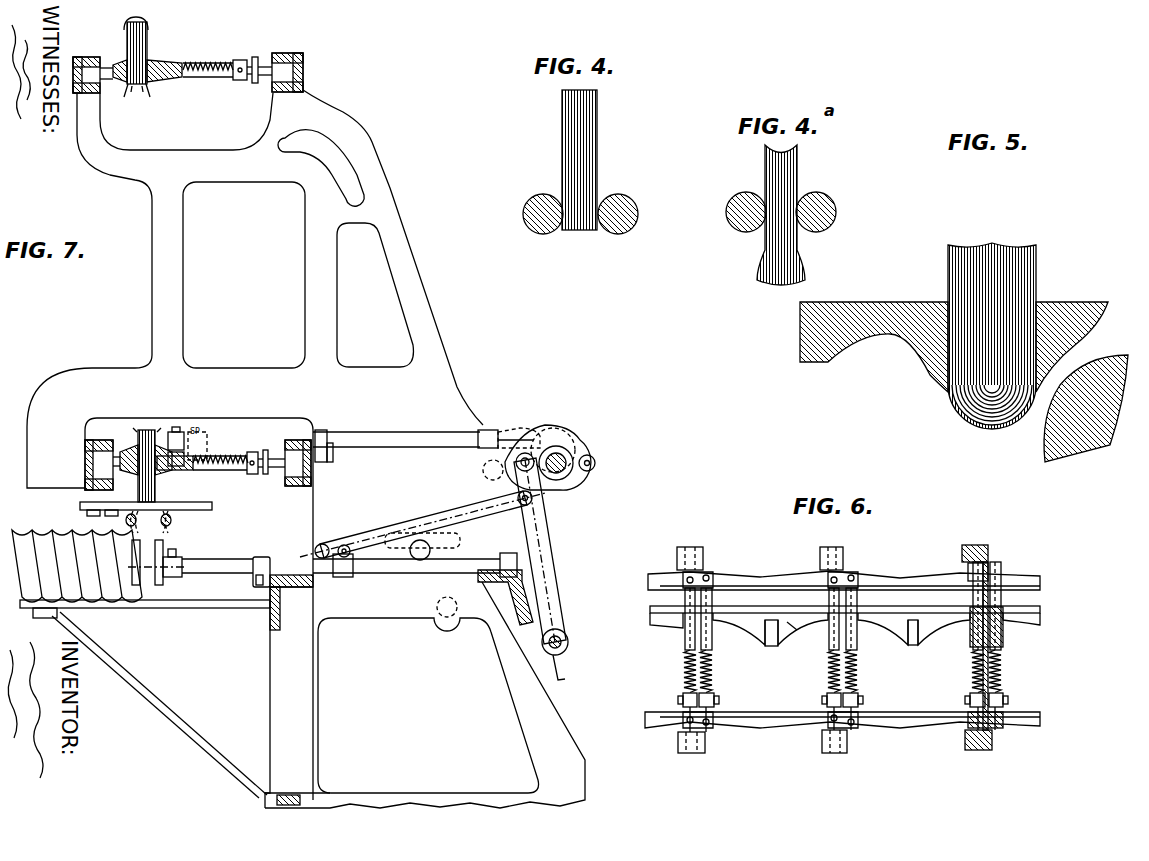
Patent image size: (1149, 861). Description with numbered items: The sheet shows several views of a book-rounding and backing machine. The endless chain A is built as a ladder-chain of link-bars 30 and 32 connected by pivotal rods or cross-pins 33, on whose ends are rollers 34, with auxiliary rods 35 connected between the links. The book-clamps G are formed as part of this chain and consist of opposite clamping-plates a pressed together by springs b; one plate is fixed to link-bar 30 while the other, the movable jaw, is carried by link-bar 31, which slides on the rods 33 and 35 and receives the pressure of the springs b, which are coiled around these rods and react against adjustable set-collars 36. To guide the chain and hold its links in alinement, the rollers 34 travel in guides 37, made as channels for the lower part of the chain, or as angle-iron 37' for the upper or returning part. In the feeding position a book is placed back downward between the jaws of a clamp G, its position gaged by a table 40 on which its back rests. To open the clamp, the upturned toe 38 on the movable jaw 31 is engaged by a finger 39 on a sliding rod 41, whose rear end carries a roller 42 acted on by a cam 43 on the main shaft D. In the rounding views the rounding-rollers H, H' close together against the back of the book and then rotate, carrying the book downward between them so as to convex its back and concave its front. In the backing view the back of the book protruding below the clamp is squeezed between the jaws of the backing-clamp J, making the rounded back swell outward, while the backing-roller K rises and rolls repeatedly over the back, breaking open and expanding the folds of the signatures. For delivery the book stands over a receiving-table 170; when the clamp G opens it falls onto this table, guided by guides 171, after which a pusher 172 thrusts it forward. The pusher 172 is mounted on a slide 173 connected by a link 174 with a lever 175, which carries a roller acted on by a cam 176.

In FIG. 6, the link-bar 30 is at (782, 578).
In FIG. 7, the link-bar 31 is at (170, 471).
In FIG. 6, the link-bar 31 is at (787, 623).
In FIG. 6, the link-bar 32 is at (786, 728).
In FIG. 6, the pivotal rods or cross-pins 33 is at (690, 753).
In FIG. 6, the rollers 34 is at (988, 550).
In FIG. 6, the auxiliary rods 35 is at (712, 720).
In FIG. 6, the adjustable set-collars 36 is at (714, 697).
In FIG. 7, the guides 37 is at (180, 474).
In FIG. 7, the angle-iron guide 37' is at (206, 71).
In FIG. 7, the upturned toe 38 is at (190, 470).
In FIG. 6, the upturned toe 38 is at (765, 643).
In FIG. 7, the finger 39 is at (172, 428).
In FIG. 7, the table 40 is at (200, 511).
In FIG. 7, the sliding rod 41 is at (345, 432).
In FIG. 7, the roller 42 is at (600, 464).
In FIG. 7, the cam 43 is at (530, 428).
In FIG. 7, the receiving-table 170 is at (178, 608).
In FIG. 7, the guides 171 is at (148, 524).
In FIG. 7, the pusher 172 is at (163, 544).
In FIG. 7, the slide 173 is at (222, 566).
In FIG. 7, the link 174 is at (415, 525).
In FIG. 7, the lever 175 is at (548, 552).
In FIG. 7, the cam 176 is at (580, 440).
In FIG. 7, the endless chain A is at (192, 268).
In FIG. 6, the endless chain A is at (779, 685).
In FIG. 6, the clamping-plates a is at (792, 616).
In FIG. 6, the springs b is at (850, 647).
In FIG. 4, the bundle of bristles c is at (562, 138).
In FIG. 4a, the bundle of bristles c is at (775, 215).
In FIG. 5, the bundle of bristles c is at (948, 278).
In FIG. 7, the main shaft D is at (558, 470).
In FIG. 7, the book-clamps G is at (127, 97).
In FIG. 6, the book-clamps G is at (742, 588).
In FIG. 4, the rounding-roller H is at (531, 214).
In FIG. 4a, the rounding-roller H is at (734, 212).
In FIG. 4, the rounding-roller H' is at (630, 214).
In FIG. 4a, the rounding-roller H' is at (829, 212).
In FIG. 5, the backing-clamp J is at (954, 347).
In FIG. 5, the backing-roller K is at (1086, 408).